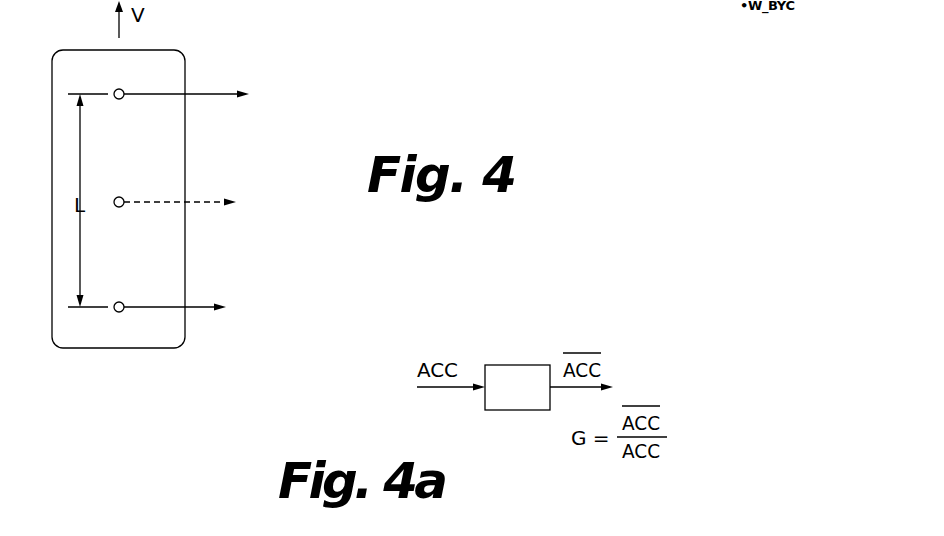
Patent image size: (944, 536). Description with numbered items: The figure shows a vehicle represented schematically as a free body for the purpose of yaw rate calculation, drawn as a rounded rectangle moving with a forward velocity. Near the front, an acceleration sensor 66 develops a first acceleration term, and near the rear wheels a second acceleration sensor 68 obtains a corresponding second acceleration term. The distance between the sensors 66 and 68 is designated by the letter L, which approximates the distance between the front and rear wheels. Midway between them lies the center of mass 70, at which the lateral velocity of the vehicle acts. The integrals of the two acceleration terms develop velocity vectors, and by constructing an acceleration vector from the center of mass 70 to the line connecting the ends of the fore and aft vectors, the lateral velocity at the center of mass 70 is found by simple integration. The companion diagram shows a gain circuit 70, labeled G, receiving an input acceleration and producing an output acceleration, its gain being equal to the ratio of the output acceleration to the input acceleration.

In FIG. 4, the acceleration sensor 66 is at (124, 90).
In FIG. 4, the acceleration sensor 68 is at (124, 303).
In FIG. 4, the center of mass / gain circuit 70 is at (124, 198).
In FIG. 4a, the center of mass / gain circuit 70 is at (525, 365).